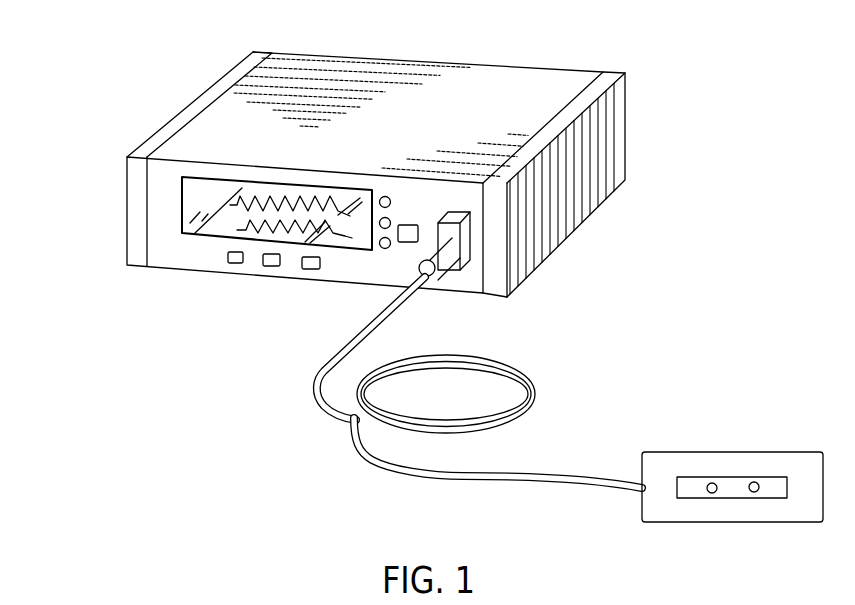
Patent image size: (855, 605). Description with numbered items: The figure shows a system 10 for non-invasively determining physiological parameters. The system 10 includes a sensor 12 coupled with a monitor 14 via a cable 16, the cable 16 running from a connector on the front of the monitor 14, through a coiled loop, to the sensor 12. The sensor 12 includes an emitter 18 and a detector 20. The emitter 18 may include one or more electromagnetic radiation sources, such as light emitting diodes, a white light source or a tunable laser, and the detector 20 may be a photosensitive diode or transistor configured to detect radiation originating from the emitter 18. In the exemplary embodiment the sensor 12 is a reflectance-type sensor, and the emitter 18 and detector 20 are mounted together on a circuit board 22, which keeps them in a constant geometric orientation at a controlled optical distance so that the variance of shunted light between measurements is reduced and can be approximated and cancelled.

The system 10 is at (146, 42).
The sensor 12 is at (680, 452).
The monitor 14 is at (502, 77).
The cable 16 is at (517, 377).
The emitter 18 is at (713, 493).
The detector 20 is at (754, 493).
The circuit board 22 is at (772, 477).